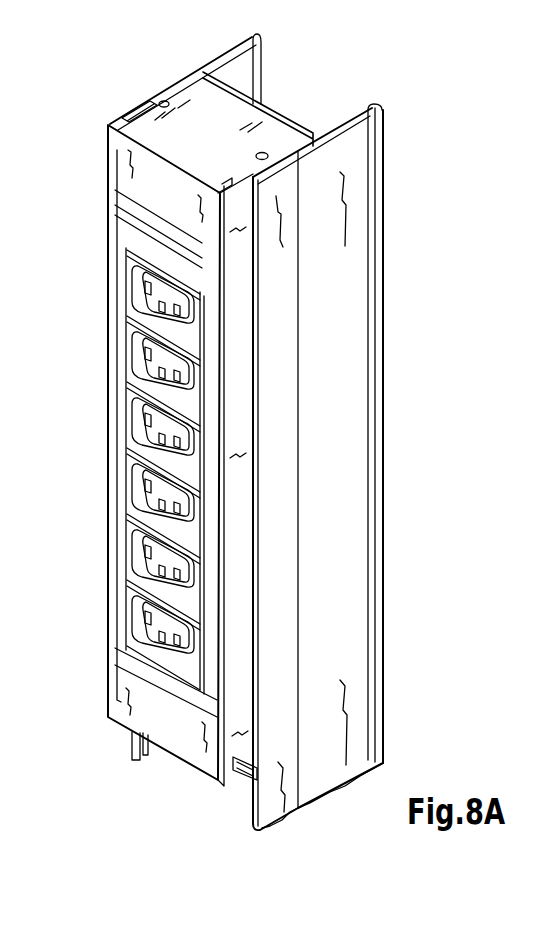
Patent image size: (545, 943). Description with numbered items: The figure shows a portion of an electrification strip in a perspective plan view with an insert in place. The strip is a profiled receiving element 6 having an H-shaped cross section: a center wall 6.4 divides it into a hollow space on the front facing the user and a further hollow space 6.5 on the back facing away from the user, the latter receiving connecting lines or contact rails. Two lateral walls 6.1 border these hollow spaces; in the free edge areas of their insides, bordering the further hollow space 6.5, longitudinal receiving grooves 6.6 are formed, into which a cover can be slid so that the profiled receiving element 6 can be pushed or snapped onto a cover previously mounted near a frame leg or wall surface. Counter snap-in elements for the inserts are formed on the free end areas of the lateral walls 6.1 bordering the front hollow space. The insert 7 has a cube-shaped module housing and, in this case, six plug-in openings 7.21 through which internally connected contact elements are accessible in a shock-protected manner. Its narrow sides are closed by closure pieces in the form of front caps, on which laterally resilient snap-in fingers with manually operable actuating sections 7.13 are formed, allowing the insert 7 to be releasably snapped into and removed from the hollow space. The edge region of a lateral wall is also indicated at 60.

The profiled receiving element 6 is at (296, 421).
The lateral wall 6.1 is at (190, 74).
The center wall 6.4 is at (288, 116).
The further hollow space 6.5 is at (351, 92).
The receiving groove 6.6 is at (258, 38).
The edge profile of side wall 60 is at (386, 570).
The insert 7 is at (152, 422).
The actuating section 7.13 is at (121, 111).
The plug-in opening 7.21 is at (137, 290).